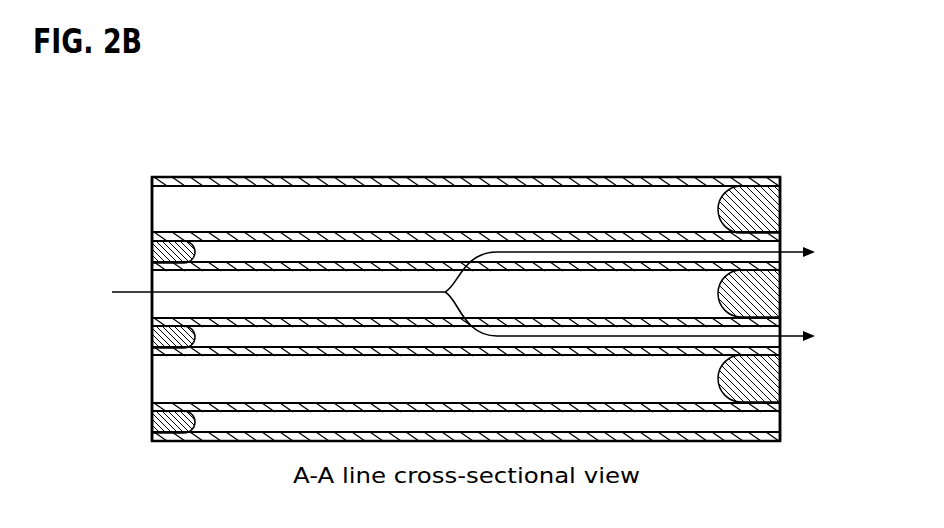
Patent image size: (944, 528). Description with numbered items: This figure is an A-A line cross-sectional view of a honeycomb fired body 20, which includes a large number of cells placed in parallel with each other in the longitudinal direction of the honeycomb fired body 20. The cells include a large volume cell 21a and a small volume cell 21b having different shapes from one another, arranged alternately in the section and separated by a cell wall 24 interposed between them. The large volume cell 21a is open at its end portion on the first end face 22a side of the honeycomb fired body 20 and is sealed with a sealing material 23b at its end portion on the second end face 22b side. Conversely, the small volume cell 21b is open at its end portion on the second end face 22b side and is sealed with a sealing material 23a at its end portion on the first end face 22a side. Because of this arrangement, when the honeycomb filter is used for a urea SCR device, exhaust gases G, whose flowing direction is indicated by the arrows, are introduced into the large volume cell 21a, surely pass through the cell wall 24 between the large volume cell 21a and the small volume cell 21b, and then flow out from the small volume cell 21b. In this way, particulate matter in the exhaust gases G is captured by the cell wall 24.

The honeycomb fired body 20 is at (354, 155).
The large volume cell 21a is at (168, 200).
The small volume cell 21b is at (776, 258).
The first end face 22a is at (134, 183).
The second end face 22b is at (802, 182).
The sealing material 23a is at (160, 250).
The sealing material 23b is at (776, 207).
The cell wall 24 is at (458, 236).
The exhaust gases G is at (456, 294).